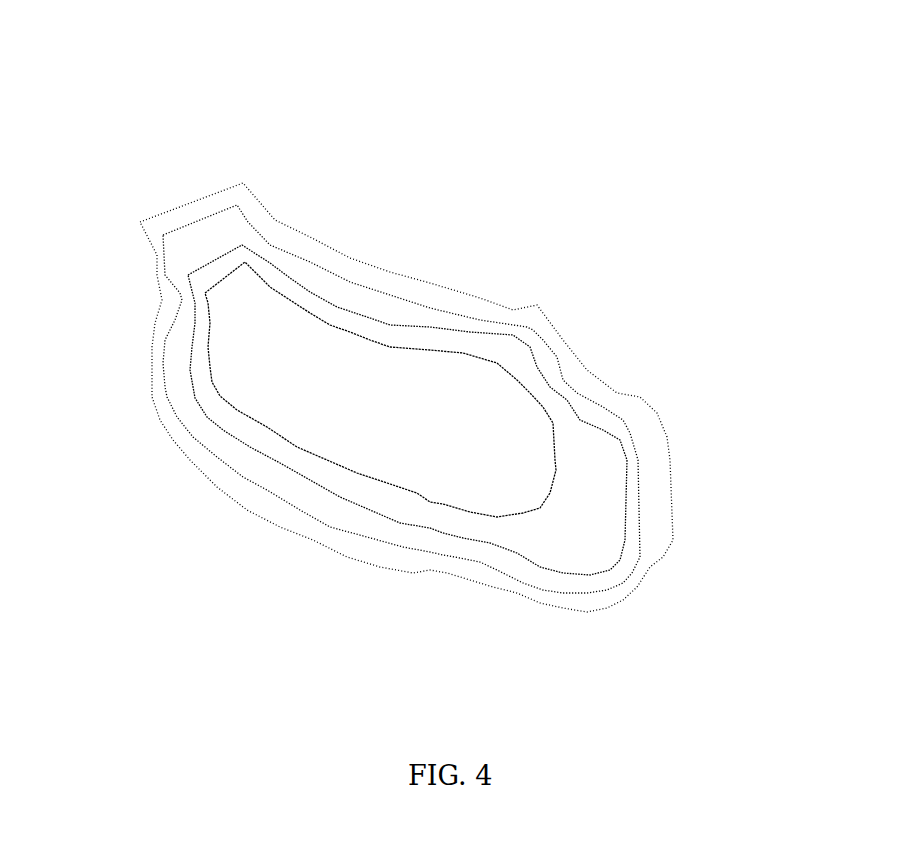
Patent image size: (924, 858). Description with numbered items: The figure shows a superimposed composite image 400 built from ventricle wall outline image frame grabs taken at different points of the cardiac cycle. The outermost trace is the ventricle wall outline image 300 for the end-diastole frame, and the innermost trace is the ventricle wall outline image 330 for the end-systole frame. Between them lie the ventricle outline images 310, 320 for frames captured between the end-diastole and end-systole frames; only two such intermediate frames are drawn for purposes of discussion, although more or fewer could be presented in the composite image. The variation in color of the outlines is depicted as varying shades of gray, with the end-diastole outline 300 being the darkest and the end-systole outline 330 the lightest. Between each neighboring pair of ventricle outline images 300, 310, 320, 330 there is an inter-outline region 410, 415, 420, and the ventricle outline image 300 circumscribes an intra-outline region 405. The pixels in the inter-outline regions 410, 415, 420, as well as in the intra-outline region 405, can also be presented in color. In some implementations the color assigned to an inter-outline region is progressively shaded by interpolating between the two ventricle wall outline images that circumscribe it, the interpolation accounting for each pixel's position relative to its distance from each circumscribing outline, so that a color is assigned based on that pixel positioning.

The ventricle wall outline image 300 is at (667, 438).
The ventricle outline image 310 is at (580, 393).
The ventricle outline image 320 is at (370, 318).
The ventricle wall outline image 330 is at (258, 273).
The superimposed composite image 400 is at (158, 106).
The intra-outline region 405 is at (460, 472).
The inter-outline region 410 is at (357, 487).
The inter-outline region 415 is at (257, 463).
The inter-outline region 420 is at (187, 439).